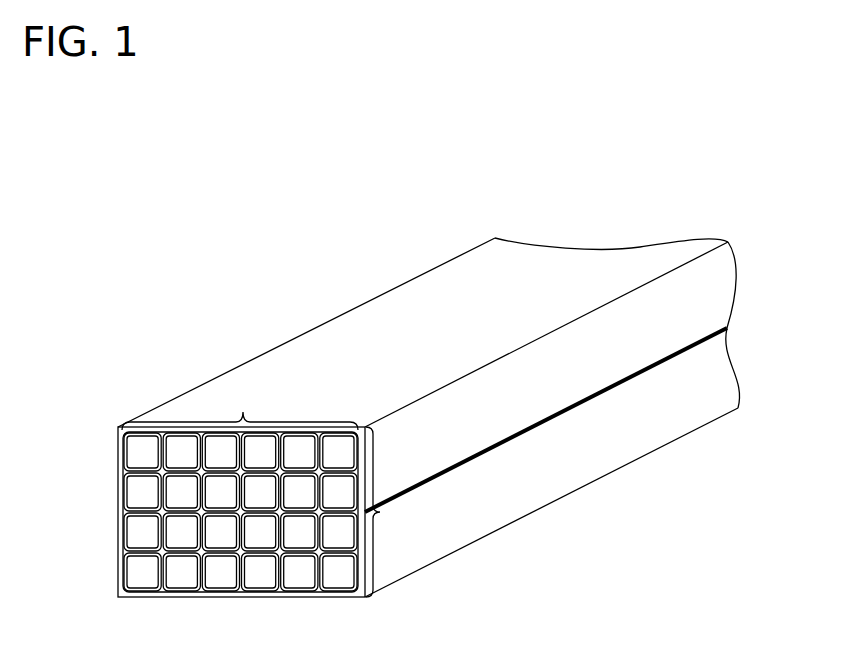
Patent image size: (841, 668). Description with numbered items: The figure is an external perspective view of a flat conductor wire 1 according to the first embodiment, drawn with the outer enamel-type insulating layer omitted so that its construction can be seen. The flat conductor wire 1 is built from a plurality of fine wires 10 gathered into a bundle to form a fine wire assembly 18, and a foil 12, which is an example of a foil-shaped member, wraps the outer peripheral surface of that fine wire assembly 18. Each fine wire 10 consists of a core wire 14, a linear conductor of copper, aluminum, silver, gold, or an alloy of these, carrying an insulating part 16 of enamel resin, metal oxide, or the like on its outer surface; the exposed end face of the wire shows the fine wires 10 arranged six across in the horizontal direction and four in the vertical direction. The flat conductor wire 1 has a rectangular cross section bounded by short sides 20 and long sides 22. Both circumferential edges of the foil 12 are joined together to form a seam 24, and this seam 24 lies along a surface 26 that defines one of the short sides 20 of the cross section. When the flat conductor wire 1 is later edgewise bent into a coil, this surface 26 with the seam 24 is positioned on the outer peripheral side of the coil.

The flat conductor wire 1 is at (230, 280).
The fine wire 10 is at (65, 537).
The foil 12 is at (367, 338).
The core wire 14 is at (138, 572).
The insulating part 16 is at (143, 591).
The fine wire assembly 18 is at (122, 490).
The short side 20 is at (546, 462).
The long side 22 is at (240, 409).
The seam 24 is at (466, 462).
The surface 26 is at (658, 317).